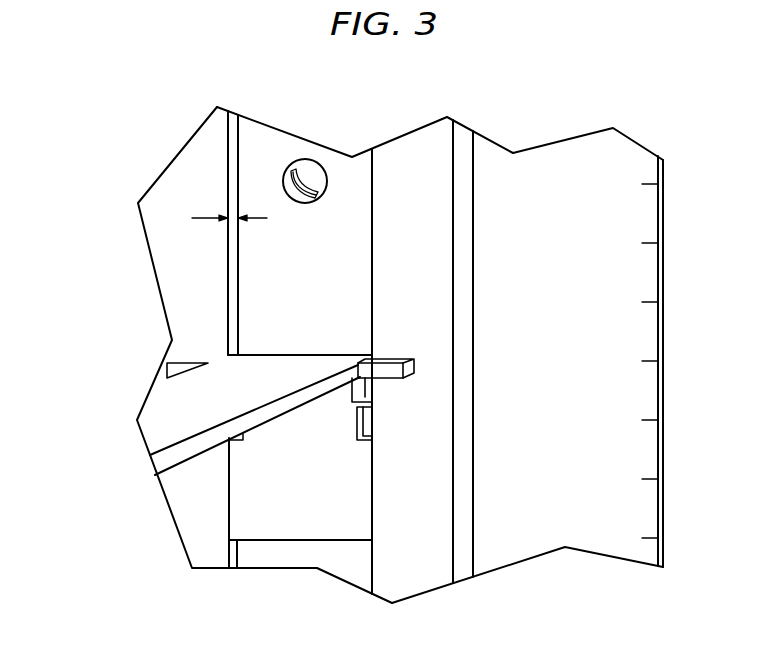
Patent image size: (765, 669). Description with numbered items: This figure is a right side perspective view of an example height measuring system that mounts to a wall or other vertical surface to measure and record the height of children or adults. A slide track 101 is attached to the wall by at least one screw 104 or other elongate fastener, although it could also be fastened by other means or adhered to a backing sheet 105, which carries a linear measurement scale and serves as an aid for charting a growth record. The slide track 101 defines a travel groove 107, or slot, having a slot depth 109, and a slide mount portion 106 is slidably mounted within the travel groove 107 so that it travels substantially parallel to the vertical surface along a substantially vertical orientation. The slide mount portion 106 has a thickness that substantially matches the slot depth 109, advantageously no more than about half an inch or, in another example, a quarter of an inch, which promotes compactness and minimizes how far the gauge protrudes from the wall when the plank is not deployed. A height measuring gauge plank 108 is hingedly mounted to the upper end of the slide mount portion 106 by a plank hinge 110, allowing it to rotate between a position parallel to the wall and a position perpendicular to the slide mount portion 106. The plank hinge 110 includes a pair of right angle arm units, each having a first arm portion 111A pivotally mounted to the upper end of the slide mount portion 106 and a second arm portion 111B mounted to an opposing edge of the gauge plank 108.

The slide track 101 is at (461, 197).
The screw 104 is at (303, 165).
The backing sheet 105 is at (570, 296).
The slide mount portion 106 is at (265, 483).
The travel groove 107 is at (265, 255).
The height measuring gauge plank 108 is at (203, 400).
The slot depth 109 is at (234, 208).
The plank hinge 110 is at (365, 398).
The first arm portion 111A is at (192, 360).
The second arm portion 111B is at (380, 372).